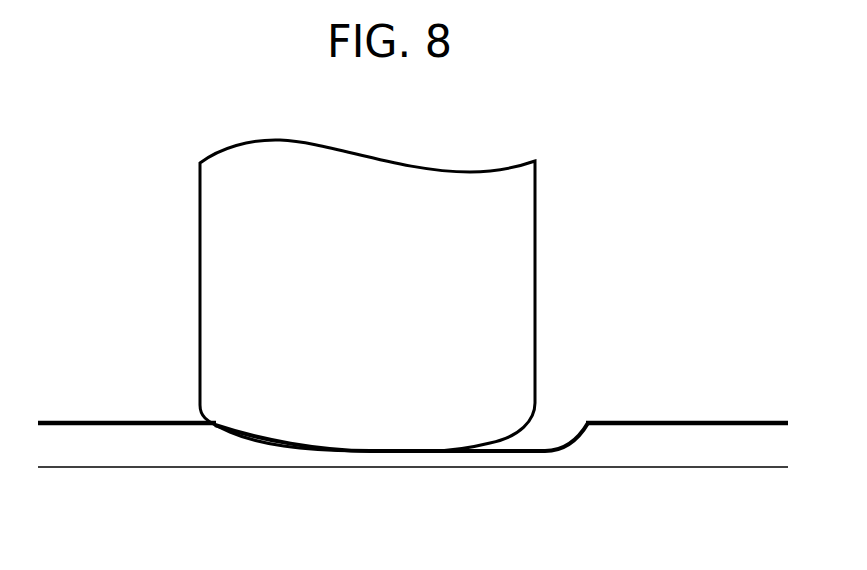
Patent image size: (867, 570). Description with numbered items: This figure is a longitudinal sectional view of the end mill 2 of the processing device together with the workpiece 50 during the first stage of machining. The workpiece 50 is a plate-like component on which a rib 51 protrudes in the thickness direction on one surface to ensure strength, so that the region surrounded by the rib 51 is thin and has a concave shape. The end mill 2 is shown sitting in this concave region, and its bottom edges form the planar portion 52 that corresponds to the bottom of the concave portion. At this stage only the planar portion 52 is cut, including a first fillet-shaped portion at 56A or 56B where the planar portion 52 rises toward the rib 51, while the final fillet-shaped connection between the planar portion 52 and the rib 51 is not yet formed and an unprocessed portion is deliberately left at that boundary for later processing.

The end mill 2 is at (432, 195).
The workpiece 50 is at (703, 404).
The rib 51 is at (97, 421).
The planar portion 52 is at (497, 447).
The first fillet-shaped portion 56A is at (238, 433).
The first fillet-shaped portion 56B is at (577, 443).